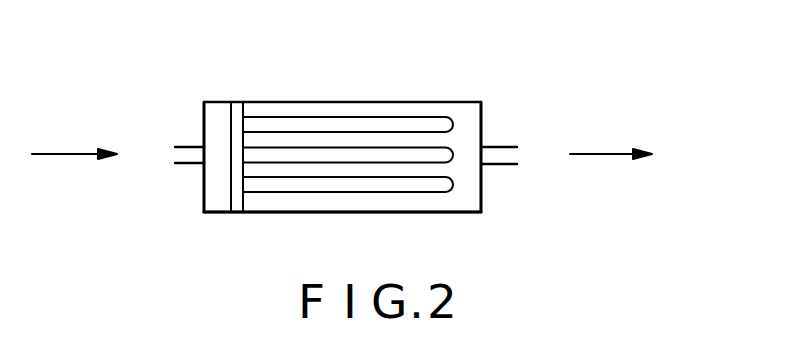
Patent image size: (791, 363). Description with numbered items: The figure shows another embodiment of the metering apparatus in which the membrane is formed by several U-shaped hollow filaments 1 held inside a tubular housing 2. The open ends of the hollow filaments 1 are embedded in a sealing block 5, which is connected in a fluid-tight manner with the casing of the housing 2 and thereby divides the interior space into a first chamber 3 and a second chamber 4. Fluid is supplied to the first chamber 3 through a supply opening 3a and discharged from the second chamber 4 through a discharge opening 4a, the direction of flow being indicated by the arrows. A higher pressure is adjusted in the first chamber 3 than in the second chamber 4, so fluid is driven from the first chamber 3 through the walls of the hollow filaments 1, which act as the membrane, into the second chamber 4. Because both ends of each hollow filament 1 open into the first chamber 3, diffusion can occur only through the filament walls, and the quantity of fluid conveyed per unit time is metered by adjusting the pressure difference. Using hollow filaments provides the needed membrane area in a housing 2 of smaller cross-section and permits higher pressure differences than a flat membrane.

The U-shaped hollow filaments 1 is at (410, 192).
The tubular housing 2 is at (372, 102).
The first chamber 3 is at (217, 192).
The supply opening 3a is at (185, 155).
The second chamber 4 is at (465, 183).
The discharge opening 4a is at (493, 152).
The sealing block 5 is at (236, 124).